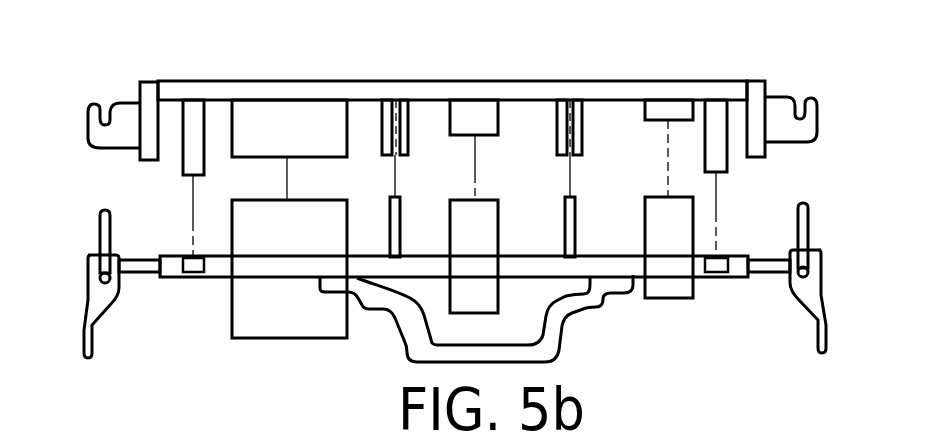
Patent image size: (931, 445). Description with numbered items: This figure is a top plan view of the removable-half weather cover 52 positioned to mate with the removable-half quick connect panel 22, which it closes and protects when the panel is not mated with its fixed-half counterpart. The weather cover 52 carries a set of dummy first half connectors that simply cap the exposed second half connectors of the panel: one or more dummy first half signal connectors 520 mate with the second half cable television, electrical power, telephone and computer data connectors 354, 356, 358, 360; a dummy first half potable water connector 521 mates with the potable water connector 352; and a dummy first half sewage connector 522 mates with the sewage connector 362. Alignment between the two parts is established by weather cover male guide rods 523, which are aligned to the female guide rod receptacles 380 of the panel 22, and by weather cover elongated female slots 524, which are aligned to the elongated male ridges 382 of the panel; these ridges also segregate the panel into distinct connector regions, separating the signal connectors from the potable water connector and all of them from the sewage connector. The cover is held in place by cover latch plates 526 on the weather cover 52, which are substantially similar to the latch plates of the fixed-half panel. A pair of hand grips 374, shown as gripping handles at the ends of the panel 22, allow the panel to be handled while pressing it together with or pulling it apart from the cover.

The removable-half weather cover 52 is at (277, 78).
The dummy first half signal connectors 520 is at (668, 110).
The dummy first half potable water connector 521 is at (477, 112).
The dummy first half sewage connector 522 is at (303, 128).
The weather cover male guide rods 523 is at (193, 130).
The weather cover elongated female slots 524 is at (572, 113).
The cover latch plates 526 is at (120, 131).
The removable-half quick connect panel 22 is at (200, 292).
The female guide rod receptacles 380 is at (188, 258).
The elongated male ridges 382 is at (395, 223).
The sewage connector 362 is at (298, 228).
The potable water connector 352 is at (480, 225).
The cable television connector 354 is at (720, 294).
The electrical power connector 356 is at (720, 294).
The telephone connector 358 is at (720, 294).
The computer data connector 360 is at (672, 225).
The hand grips 374 is at (435, 353).